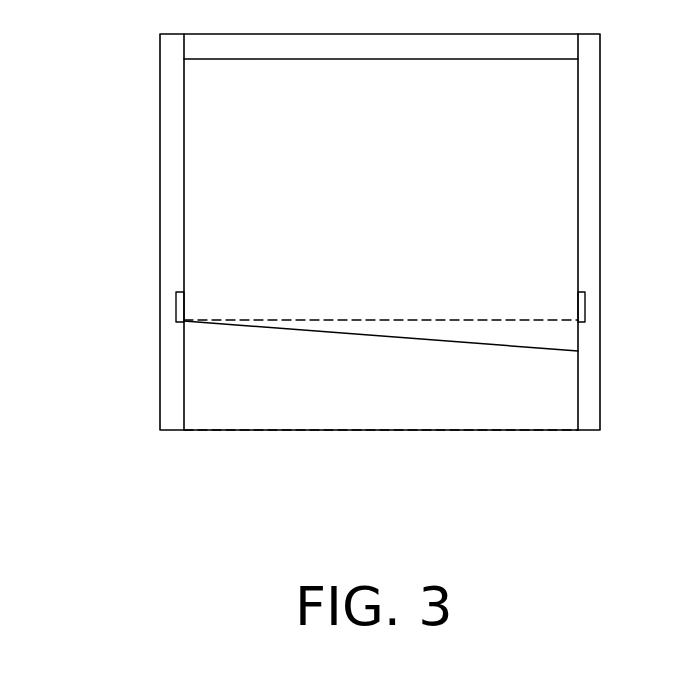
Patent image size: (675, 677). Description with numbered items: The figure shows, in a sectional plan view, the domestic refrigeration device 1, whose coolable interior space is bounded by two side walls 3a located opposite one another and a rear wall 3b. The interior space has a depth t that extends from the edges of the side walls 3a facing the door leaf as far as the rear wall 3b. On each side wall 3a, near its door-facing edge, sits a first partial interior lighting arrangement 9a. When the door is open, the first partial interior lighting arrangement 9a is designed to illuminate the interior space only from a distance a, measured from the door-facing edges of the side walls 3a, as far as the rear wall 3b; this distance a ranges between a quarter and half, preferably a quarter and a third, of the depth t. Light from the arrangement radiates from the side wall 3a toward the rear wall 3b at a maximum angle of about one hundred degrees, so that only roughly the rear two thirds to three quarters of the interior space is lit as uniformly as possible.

The domestic refrigeration device 1 is at (122, 105).
The side wall 3a is at (170, 175).
The rear wall 3b is at (374, 44).
The first partial interior lighting arrangement 9a is at (178, 310).
The depth t is at (478, 430).
The distance a is at (449, 430).